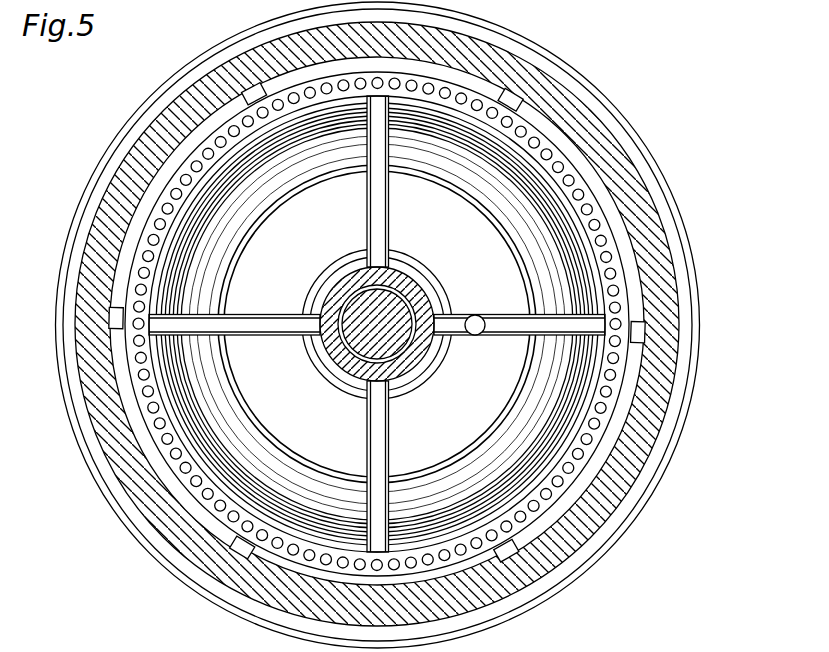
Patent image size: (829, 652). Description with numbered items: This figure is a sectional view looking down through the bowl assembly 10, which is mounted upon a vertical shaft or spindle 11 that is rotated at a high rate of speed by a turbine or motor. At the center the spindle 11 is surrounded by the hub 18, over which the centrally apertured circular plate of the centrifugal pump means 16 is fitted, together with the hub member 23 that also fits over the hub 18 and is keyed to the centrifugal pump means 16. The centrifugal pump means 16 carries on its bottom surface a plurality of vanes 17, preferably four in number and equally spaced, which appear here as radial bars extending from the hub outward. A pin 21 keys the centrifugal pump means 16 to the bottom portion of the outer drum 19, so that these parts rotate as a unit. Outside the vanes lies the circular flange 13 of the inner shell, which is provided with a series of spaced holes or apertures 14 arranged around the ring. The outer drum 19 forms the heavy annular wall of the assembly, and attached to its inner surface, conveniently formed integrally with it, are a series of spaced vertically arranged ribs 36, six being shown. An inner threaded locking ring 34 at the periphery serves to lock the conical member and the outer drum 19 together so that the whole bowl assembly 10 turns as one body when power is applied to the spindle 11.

The bowl assembly 10 is at (644, 166).
The vertical shaft or spindle 11 is at (410, 382).
The circular flange 13 is at (172, 176).
The holes or apertures 14 is at (141, 265).
The centrifugal pump means 16 is at (336, 226).
The vanes 17 is at (388, 197).
The hub 18 is at (342, 343).
The outer drum 19 is at (587, 517).
The pin 21 is at (476, 336).
The hub member 23 is at (352, 372).
The inner threaded locking ring 34 is at (100, 470).
The ribs 36 is at (250, 86).